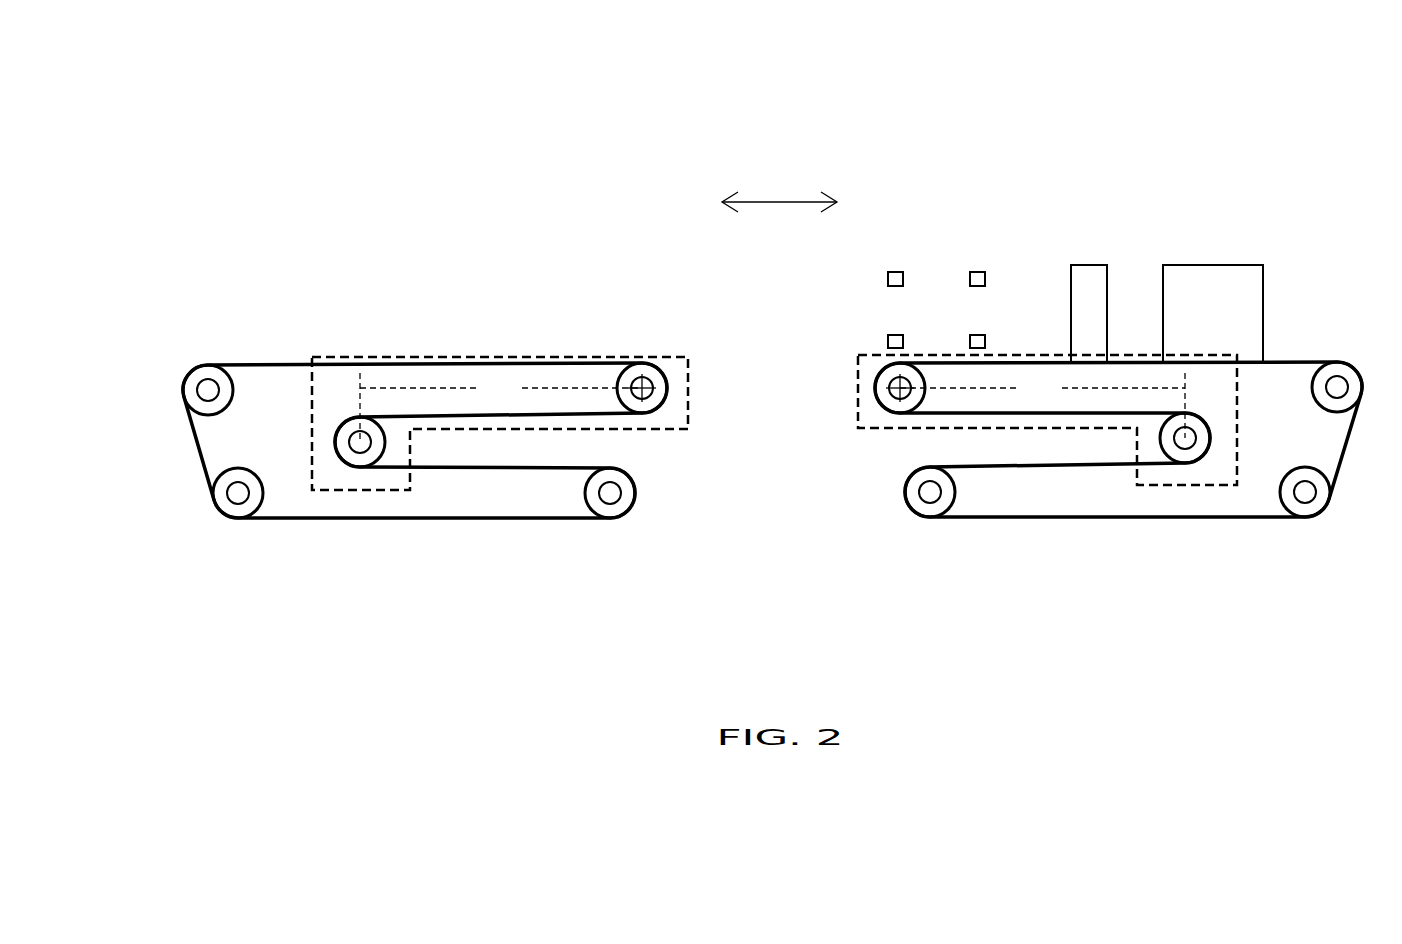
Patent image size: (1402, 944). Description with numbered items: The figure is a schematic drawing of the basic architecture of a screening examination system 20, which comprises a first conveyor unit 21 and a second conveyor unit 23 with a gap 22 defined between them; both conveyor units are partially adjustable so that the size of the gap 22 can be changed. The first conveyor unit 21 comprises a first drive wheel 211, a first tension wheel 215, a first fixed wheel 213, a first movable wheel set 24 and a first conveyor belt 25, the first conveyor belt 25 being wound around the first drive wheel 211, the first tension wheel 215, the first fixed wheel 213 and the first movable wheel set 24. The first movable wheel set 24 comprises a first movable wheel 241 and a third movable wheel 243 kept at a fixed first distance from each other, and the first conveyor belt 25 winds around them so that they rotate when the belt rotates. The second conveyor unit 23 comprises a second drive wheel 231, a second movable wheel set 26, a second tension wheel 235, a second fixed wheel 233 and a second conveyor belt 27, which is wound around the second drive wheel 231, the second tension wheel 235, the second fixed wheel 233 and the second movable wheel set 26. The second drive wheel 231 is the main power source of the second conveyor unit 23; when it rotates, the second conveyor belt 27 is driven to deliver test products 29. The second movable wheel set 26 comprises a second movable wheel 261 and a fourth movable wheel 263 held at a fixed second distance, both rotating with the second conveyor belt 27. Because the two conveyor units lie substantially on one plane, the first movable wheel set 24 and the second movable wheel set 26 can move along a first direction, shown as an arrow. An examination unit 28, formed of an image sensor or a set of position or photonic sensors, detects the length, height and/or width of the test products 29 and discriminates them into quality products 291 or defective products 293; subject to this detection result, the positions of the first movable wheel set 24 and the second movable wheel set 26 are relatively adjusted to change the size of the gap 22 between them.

The screening examination system 20 is at (226, 233).
The first conveyor unit 21 is at (1102, 533).
The first drive wheel 211 is at (927, 512).
The first fixed wheel 213 is at (1350, 402).
The first tension wheel 215 is at (1310, 513).
The gap 22 is at (764, 347).
The second conveyor unit 23 is at (402, 545).
The second drive wheel 231 is at (608, 518).
The second fixed wheel 233 is at (195, 401).
The second tension wheel 235 is at (233, 515).
The first movable wheel set 24 is at (886, 430).
The first movable wheel 241 is at (880, 387).
The third movable wheel 243 is at (1160, 440).
The first conveyor belt 25 is at (1022, 520).
The second movable wheel set 26 is at (665, 430).
The second movable wheel 261 is at (647, 363).
The fourth movable wheel 263 is at (387, 441).
The second conveyor belt 27 is at (288, 523).
The examination unit 28 is at (945, 252).
The test products 29 is at (1180, 197).
The quality products 291 is at (1172, 267).
The defective products 293 is at (1093, 267).